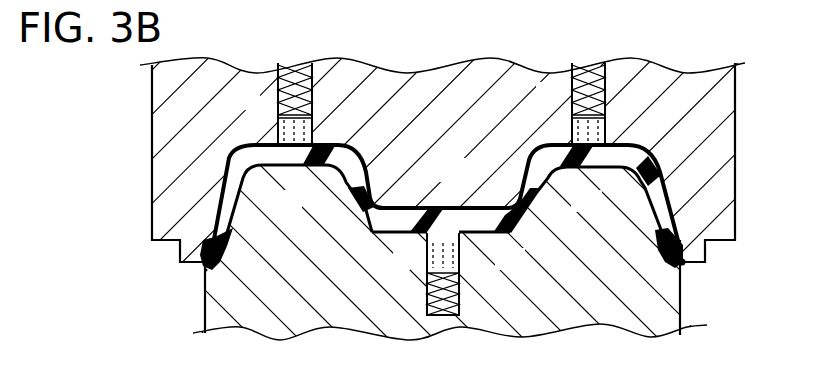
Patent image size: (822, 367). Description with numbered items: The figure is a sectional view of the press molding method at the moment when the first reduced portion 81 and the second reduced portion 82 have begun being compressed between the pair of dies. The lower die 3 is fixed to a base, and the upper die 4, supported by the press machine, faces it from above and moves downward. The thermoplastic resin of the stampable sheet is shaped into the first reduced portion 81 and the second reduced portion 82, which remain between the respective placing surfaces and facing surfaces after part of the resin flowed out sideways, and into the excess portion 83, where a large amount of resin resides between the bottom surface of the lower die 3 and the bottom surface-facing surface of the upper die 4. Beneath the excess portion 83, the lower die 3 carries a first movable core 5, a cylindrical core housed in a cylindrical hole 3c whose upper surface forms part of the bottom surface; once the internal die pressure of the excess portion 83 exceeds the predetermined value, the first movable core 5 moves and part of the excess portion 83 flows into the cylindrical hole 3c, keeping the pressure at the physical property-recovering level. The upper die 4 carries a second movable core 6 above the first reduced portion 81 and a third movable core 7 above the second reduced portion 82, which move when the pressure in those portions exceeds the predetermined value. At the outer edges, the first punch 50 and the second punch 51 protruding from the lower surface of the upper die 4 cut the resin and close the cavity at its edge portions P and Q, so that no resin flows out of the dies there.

The lower die 3 is at (682, 324).
The cylindrical hole 3c is at (462, 264).
The upper die 4 is at (736, 152).
The first movable core 5 is at (426, 260).
The second movable core 6 is at (279, 130).
The third movable core 7 is at (573, 130).
The first punch 50 is at (192, 263).
The second punch 51 is at (692, 262).
The first reduced portion 81 is at (290, 160).
The second reduced portion 82 is at (590, 160).
The excess portion 83 is at (450, 217).
The edge portion of the cavity P is at (203, 280).
The edge portion of the cavity Q is at (685, 268).